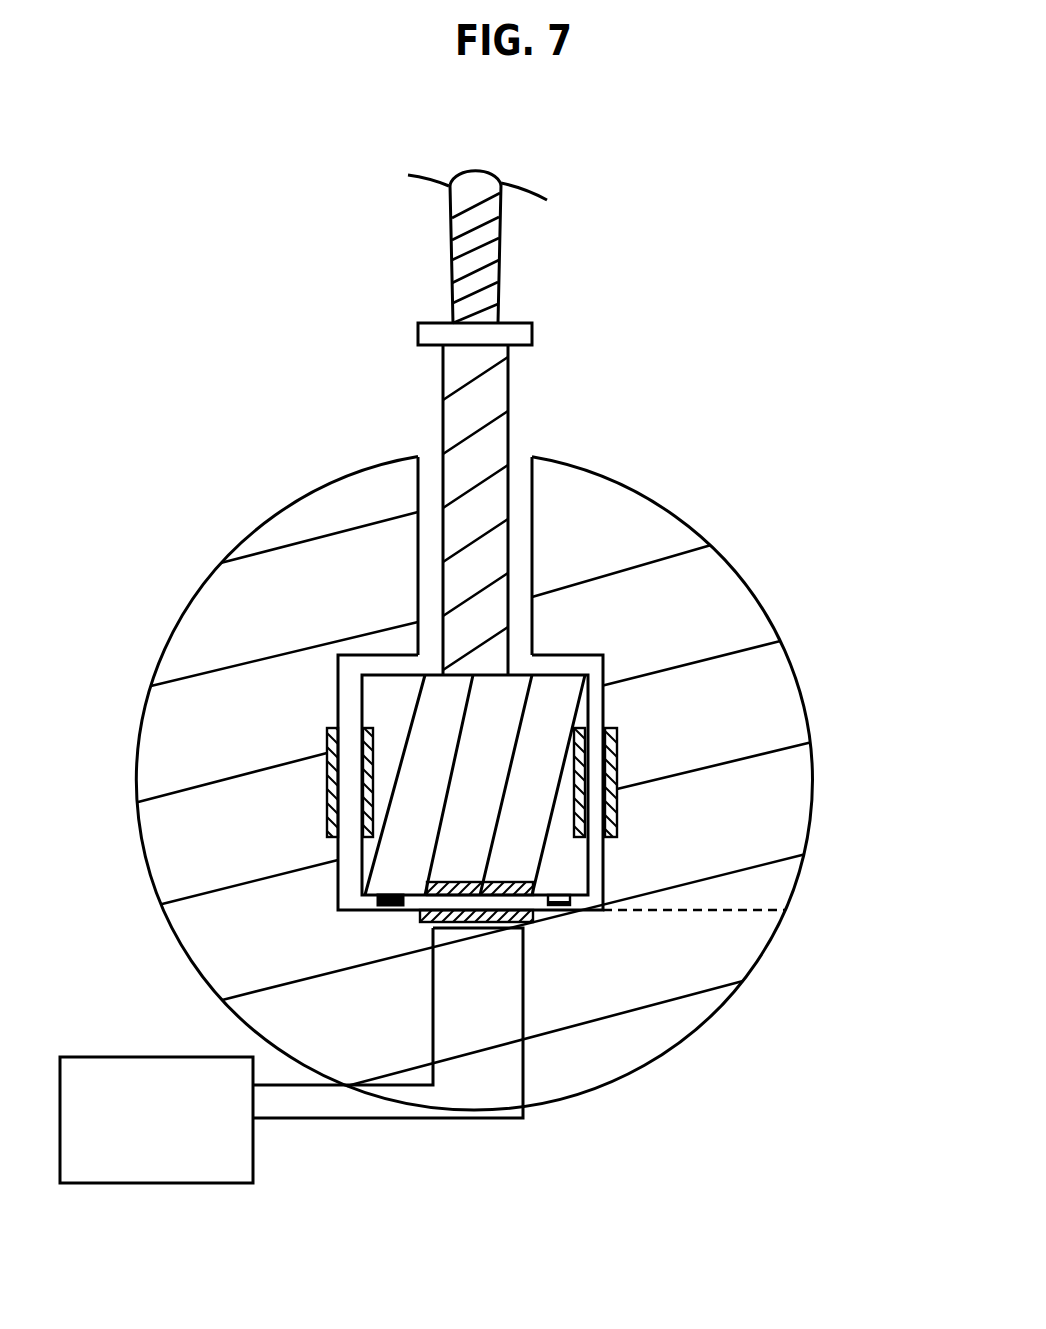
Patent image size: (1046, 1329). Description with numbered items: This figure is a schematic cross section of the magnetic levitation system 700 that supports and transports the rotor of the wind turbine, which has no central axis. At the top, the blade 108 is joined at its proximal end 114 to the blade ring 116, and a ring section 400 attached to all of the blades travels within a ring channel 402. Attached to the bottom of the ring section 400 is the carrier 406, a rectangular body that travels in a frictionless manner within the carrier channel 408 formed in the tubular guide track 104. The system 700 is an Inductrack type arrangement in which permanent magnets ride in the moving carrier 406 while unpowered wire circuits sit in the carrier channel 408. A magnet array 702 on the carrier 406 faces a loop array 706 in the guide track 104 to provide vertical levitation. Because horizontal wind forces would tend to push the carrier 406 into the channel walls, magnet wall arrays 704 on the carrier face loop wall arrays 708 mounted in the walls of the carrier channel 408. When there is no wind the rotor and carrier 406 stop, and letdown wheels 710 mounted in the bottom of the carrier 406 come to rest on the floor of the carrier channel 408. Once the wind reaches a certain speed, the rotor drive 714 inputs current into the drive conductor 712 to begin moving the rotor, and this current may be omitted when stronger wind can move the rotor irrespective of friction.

The guide track 104 is at (762, 955).
The blade 108 is at (502, 248).
The proximal end 114 is at (500, 310).
The blade ring 116 is at (537, 433).
The ring section 400 is at (443, 418).
The ring channel 402 is at (533, 523).
The carrier 406 is at (607, 642).
The carrier channel 408 is at (338, 706).
The magnetic levitation system 700 is at (625, 722).
The magnet array 702 is at (506, 880).
The magnet wall arrays 704 is at (577, 790).
The loop array 706 is at (467, 923).
The loop wall arrays 708 is at (685, 742).
The letdown wheels 710 is at (575, 957).
The drive conductor 712 is at (300, 1082).
The rotor drive 714 is at (157, 1057).